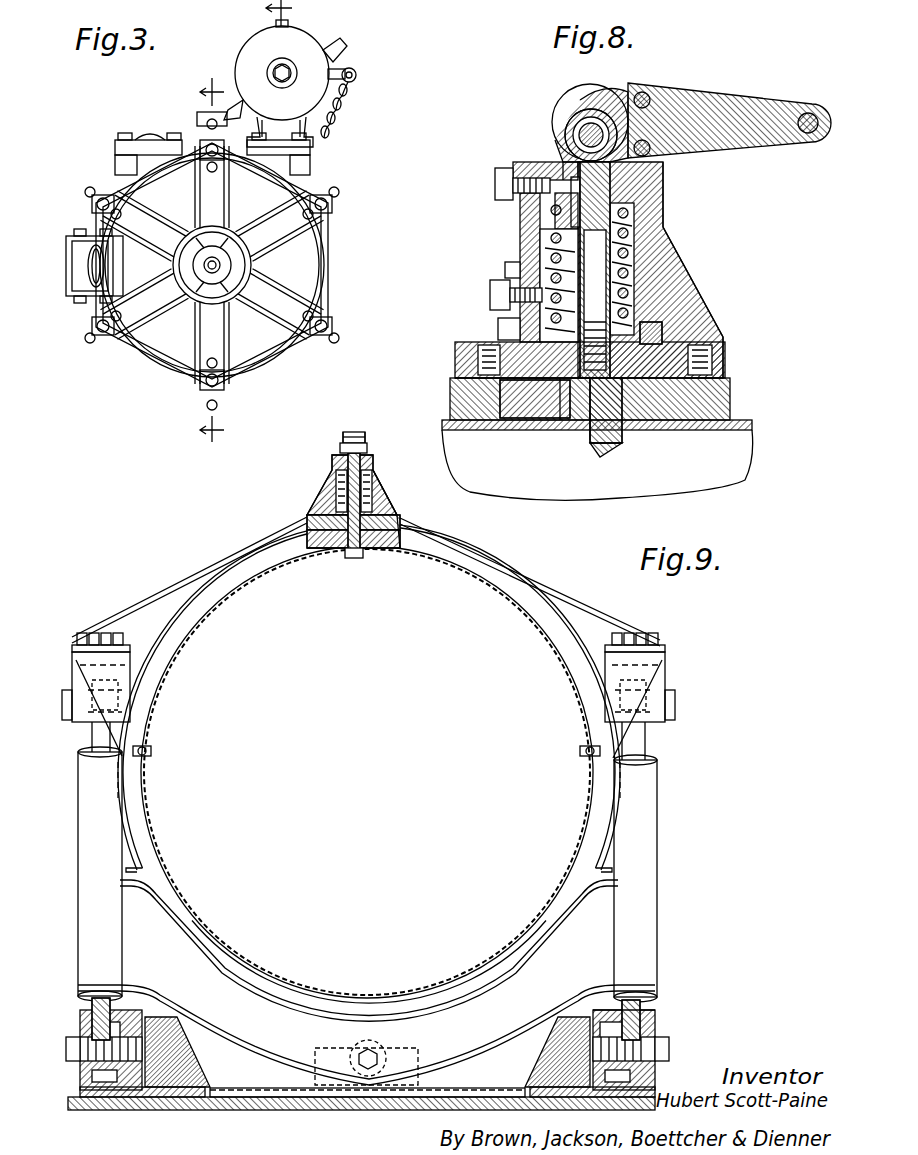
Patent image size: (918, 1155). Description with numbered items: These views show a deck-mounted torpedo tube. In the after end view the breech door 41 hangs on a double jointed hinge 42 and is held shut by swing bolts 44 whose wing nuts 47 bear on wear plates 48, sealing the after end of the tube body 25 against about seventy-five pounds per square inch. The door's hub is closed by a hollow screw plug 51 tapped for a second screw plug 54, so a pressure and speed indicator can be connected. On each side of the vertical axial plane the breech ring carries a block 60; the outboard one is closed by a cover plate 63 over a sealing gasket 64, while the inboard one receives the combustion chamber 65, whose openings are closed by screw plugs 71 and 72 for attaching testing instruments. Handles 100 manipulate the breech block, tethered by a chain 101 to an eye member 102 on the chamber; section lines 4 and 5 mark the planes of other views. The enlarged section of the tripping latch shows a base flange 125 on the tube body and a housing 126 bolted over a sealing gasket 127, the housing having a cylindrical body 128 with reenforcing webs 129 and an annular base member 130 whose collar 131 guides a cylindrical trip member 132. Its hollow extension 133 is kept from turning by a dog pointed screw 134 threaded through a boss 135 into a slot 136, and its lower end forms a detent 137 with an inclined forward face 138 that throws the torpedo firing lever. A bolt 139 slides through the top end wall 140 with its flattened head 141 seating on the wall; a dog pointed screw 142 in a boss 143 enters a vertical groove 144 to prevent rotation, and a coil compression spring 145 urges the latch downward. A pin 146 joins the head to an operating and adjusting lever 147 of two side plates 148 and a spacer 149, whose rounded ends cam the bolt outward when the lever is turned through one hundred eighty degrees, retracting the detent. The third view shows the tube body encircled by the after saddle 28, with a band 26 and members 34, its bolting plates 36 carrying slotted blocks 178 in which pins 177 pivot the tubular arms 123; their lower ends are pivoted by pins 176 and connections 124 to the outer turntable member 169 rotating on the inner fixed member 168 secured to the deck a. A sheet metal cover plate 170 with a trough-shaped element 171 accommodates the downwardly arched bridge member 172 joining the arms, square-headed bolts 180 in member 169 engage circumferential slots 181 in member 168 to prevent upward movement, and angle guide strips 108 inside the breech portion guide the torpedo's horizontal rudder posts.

In FIG. 3, the breech door 41 is at (306, 262).
In FIG. 3, the double jointed hinge 42 is at (93, 298).
In FIG. 3, the swing bolts 44 is at (198, 120).
In FIG. 3, the wing nuts 47 is at (207, 126).
In FIG. 3, the wear plates 48 is at (332, 211).
In FIG. 3, the screw plug 51 is at (220, 268).
In FIG. 3, the screw plug 54 is at (232, 282).
In FIG. 3, the integral block 60 is at (116, 168).
In FIG. 3, the cover plate 63 is at (120, 138).
In FIG. 3, the sealing gasket 64 is at (118, 146).
In FIG. 3, the combustion chamber 65 is at (296, 45).
In FIG. 3, the screw plug 71 is at (286, 74).
In FIG. 3, the screw plug 72 is at (277, 19).
In FIG. 3, the handles 100 is at (344, 46).
In FIG. 3, the chain 101 is at (335, 118).
In FIG. 3, the eye member 102 is at (356, 75).
In FIG. 3, the section line 4 is at (212, 258).
In FIG. 3, the section line 5 is at (282, 192).
In FIG. 8, the tube body 25 is at (745, 432).
In FIG. 8, the base flange 125 is at (732, 392).
In FIG. 9, the base flange 125 is at (640, 745).
In FIG. 8, the housing 126 is at (697, 249).
In FIG. 9, the housing 126 is at (294, 470).
In FIG. 8, the sealing gasket 127 is at (725, 368).
In FIG. 9, the sealing gasket 127 is at (306, 522).
In FIG. 8, the body 128 is at (664, 200).
In FIG. 9, the body 128 is at (378, 472).
In FIG. 8, the reenforcing webs 129 is at (700, 272).
In FIG. 8, the annular base member 130 is at (725, 350).
In FIG. 9, the annular base member 130 is at (308, 518).
In FIG. 8, the collar 131 is at (512, 425).
In FIG. 9, the collar 131 is at (322, 550).
In FIG. 8, the trip member 132 is at (565, 430).
In FIG. 9, the trip member 132 is at (345, 556).
In FIG. 8, the hollow cylindrical extension 133 is at (698, 286).
In FIG. 9, the hollow cylindrical extension 133 is at (400, 508).
In FIG. 8, the dog pointed screw 134 is at (490, 292).
In FIG. 8, the boss 135 is at (520, 248).
In FIG. 8, the slot 136 is at (498, 324).
In FIG. 8, the detent 137 is at (598, 452).
In FIG. 9, the detent 137 is at (360, 558).
In FIG. 8, the forward face 138 is at (618, 440).
In FIG. 8, the bolt 139 is at (664, 168).
In FIG. 9, the bolt 139 is at (336, 486).
In FIG. 8, the top end wall 140 is at (545, 162).
In FIG. 8, the head 141 is at (575, 150).
In FIG. 9, the head 141 is at (354, 432).
In FIG. 8, the dog pointed screw 142 is at (495, 186).
In FIG. 8, the boss 143 is at (520, 222).
In FIG. 8, the vertical groove 144 is at (540, 235).
In FIG. 8, the coil compression spring 145 is at (636, 226).
In FIG. 9, the coil compression spring 145 is at (372, 488).
In FIG. 8, the pin 146 is at (572, 118).
In FIG. 9, the pin 146 is at (368, 448).
In FIG. 8, the operating and adjusting lever 147 is at (735, 92).
In FIG. 9, the operating and adjusting lever 147 is at (346, 432).
In FIG. 8, the side plates 148 is at (615, 82).
In FIG. 9, the side plates 148 is at (340, 436).
In FIG. 8, the spacer 149 is at (806, 112).
In FIG. 9, the band 26 is at (612, 830).
In FIG. 9, the after saddle 28 is at (554, 572).
In FIG. 9, the strap 34 is at (232, 568).
In FIG. 9, the bolting plates 36 is at (70, 645).
In FIG. 9, the angle guide strips 108 is at (150, 756).
In FIG. 9, the cylinder 123 is at (100, 862).
In FIG. 9, the bolt 124 is at (120, 1010).
In FIG. 9, the inner fixed turntable member 168 is at (178, 1097).
In FIG. 9, the outer turntable member 169 is at (108, 1098).
In FIG. 9, the cover plate 170 is at (650, 1008).
In FIG. 9, the trough-shaped element 171 is at (372, 1097).
In FIG. 9, the bridge member 172 is at (462, 1032).
In FIG. 9, the pins 176 is at (165, 1012).
In FIG. 9, the pins 177 is at (66, 722).
In FIG. 9, the slotted blocks 178 is at (676, 690).
In FIG. 9, the square-headed bolts 180 is at (392, 1050).
In FIG. 9, the slots 181 is at (335, 1048).
In FIG. 9, the base plate a is at (262, 1110).